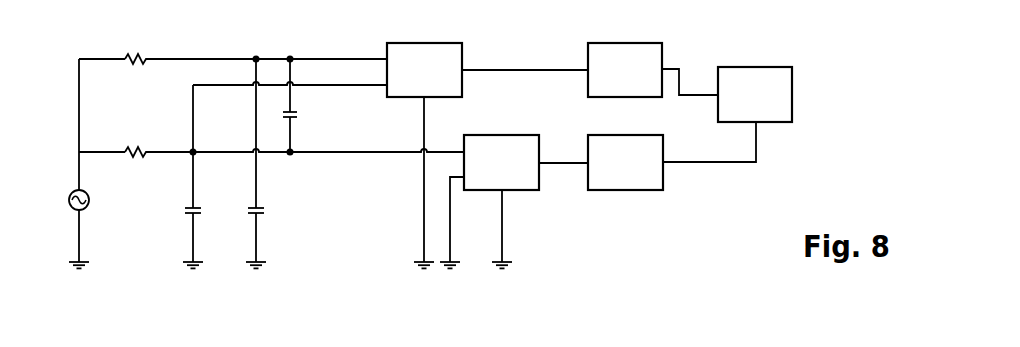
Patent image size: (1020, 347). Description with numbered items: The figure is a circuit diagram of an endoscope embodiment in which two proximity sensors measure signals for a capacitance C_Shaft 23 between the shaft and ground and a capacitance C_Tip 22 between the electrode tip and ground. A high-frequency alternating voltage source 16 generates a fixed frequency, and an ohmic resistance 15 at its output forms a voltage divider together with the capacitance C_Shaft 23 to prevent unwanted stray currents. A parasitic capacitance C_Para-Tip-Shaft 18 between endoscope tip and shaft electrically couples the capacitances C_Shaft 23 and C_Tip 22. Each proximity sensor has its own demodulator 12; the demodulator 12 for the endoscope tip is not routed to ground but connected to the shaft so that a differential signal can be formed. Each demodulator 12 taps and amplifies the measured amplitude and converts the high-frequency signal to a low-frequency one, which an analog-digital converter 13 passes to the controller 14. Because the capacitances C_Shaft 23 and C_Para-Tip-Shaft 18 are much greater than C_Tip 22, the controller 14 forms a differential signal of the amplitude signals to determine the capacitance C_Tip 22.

The demodulator 12 is at (463, 116).
The analog-digital converter 13 is at (625, 116).
The controller 14 is at (755, 94).
The ohmic resistance 15 is at (134, 89).
The high-frequency alternating voltage source 16 is at (59, 203).
The parasitic capacitance C_Para-Tip-Shaft 18 is at (311, 118).
The capacitance C_Tip 22 is at (276, 212).
The capacitance C_Shaft 23 is at (172, 212).